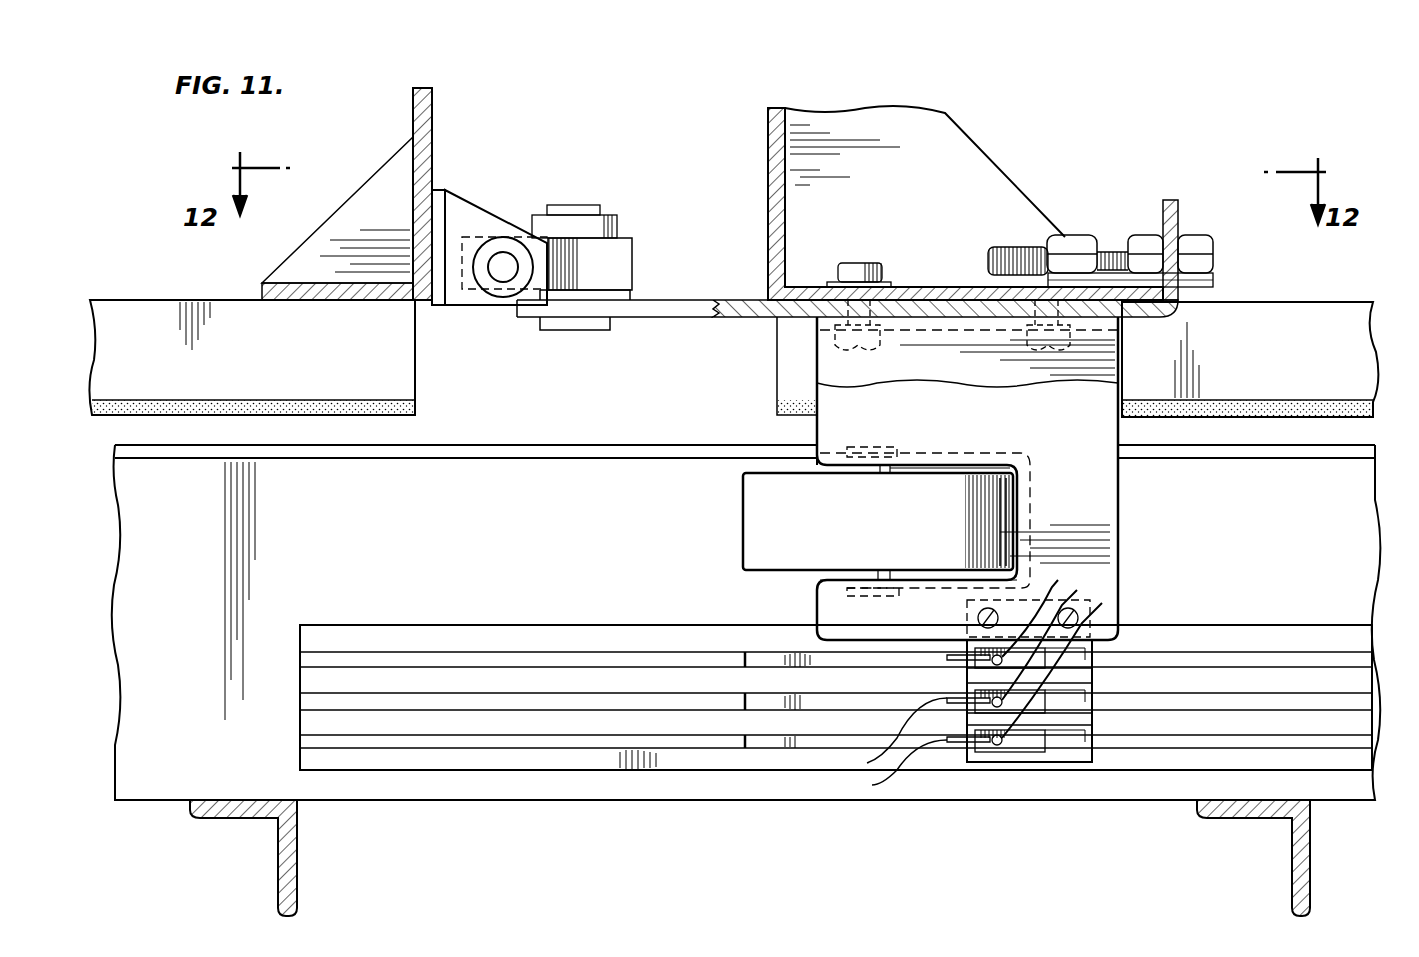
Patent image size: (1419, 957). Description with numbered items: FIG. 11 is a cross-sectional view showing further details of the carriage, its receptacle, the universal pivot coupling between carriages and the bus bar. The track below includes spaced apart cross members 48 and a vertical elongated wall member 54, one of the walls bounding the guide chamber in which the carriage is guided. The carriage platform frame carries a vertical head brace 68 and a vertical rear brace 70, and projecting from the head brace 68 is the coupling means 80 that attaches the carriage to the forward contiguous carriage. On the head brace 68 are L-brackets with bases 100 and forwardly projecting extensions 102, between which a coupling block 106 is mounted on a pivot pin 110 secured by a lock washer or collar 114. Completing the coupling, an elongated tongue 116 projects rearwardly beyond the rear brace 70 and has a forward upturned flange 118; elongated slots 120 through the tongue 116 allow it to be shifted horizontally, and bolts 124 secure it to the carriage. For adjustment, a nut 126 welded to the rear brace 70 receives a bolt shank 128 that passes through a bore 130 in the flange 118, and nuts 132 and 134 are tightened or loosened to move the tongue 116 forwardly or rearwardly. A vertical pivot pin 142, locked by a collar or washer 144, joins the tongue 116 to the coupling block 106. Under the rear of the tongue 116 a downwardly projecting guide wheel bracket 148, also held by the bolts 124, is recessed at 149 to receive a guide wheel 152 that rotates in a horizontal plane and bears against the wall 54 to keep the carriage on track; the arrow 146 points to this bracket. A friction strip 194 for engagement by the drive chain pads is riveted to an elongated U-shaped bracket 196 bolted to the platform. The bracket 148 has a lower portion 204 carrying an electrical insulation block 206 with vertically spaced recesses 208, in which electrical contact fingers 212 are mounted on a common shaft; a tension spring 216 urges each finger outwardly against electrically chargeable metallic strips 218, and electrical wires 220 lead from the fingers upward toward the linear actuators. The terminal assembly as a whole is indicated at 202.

The cross members 48 is at (290, 864).
The vertical elongated wall member 54 is at (567, 478).
The head brace 68 is at (430, 115).
The rear brace 70 is at (775, 188).
The coupling means 80 is at (555, 178).
The L-bracket bases 100 is at (439, 195).
The forwardly projecting extensions 102 is at (458, 210).
The coupling block 106 is at (622, 272).
The pivot pin 110 is at (503, 275).
The lock washer or collar 114 is at (490, 240).
The elongated tongue 116 is at (644, 312).
The forward upturned flange 118 is at (1172, 208).
The elongated slots 120 is at (1018, 319).
The bolts 124 is at (863, 262).
The nut 126 is at (1070, 236).
The bolt shank 128 is at (1022, 248).
The bore 130 is at (1192, 272).
The nut 132 is at (1145, 240).
The nut 134 is at (1196, 232).
The vertical pivot pin 142 is at (576, 210).
The locking collar or washer 144 is at (619, 226).
The carrier bracket edge 146 is at (800, 432).
The guide wheel bracket 148 is at (1106, 525).
The recess 149 is at (1010, 488).
The guide wheel 152 is at (878, 522).
The friction strip 194 is at (300, 430).
The U-shaped bracket 196 is at (158, 322).
The terminal block 202 is at (1010, 778).
The lower portion 204 is at (835, 589).
The electrical insulation block 206 is at (1050, 762).
The recesses 208 is at (966, 646).
The electrical contact fingers 212 is at (907, 776).
The tension spring 216 is at (1092, 724).
The electrically chargeable metallic strips 218 is at (425, 658).
The electrical wires 220 is at (1100, 605).